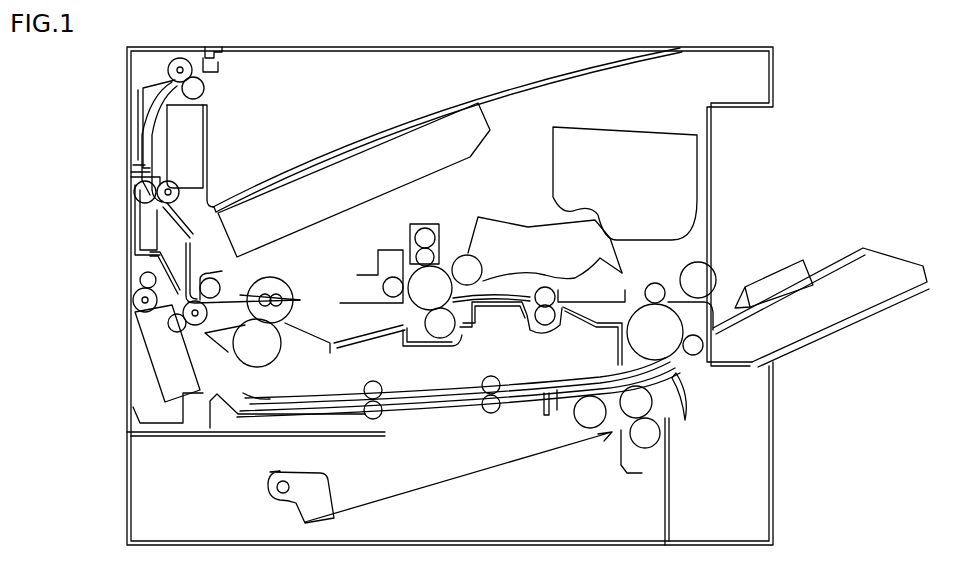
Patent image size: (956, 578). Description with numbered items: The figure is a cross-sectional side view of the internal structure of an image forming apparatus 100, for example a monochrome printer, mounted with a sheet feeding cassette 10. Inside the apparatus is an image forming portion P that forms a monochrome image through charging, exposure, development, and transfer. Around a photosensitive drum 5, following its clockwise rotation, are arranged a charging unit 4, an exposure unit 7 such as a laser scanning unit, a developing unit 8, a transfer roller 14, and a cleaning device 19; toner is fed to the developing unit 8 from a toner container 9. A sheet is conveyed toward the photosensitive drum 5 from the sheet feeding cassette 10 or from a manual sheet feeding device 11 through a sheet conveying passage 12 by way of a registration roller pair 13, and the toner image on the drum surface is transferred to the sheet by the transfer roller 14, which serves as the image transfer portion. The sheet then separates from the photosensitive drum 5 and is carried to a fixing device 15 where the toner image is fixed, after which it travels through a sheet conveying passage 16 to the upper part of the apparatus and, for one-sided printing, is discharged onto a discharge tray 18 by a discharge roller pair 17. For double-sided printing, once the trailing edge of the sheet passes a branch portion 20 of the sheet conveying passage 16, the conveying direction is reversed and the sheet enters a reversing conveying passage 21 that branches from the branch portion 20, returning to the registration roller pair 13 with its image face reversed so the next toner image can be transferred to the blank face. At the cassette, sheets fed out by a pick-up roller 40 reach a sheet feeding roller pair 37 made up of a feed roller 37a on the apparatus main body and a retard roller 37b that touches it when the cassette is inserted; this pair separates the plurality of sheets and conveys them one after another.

The image forming apparatus 100 is at (811, 102).
The sheet feeding cassette 10 is at (142, 508).
The discharge tray 18 is at (397, 114).
The exposure unit 7 is at (457, 127).
The toner container 9 is at (648, 140).
The developing unit 8 is at (597, 262).
The manual sheet feeding device 11 is at (828, 258).
The discharge roller pair 17 is at (200, 94).
The sheet conveying passage 16 is at (157, 163).
The branch portion 20 is at (183, 300).
The fixing device 15 is at (272, 278).
The cleaning device 19 is at (370, 262).
The charging unit 4 is at (425, 224).
The image forming portion P is at (455, 240).
The photosensitive drum 5 is at (415, 347).
The transfer roller 14 is at (462, 341).
The registration roller pair 13 is at (546, 330).
The reversing conveying passage 21 is at (307, 415).
The sheet conveying passage 12 is at (680, 364).
The pick-up roller 40 is at (590, 408).
The feed roller 37a is at (648, 402).
The retard roller 37b is at (653, 432).
The sheet feeding roller pair 37 is at (692, 429).